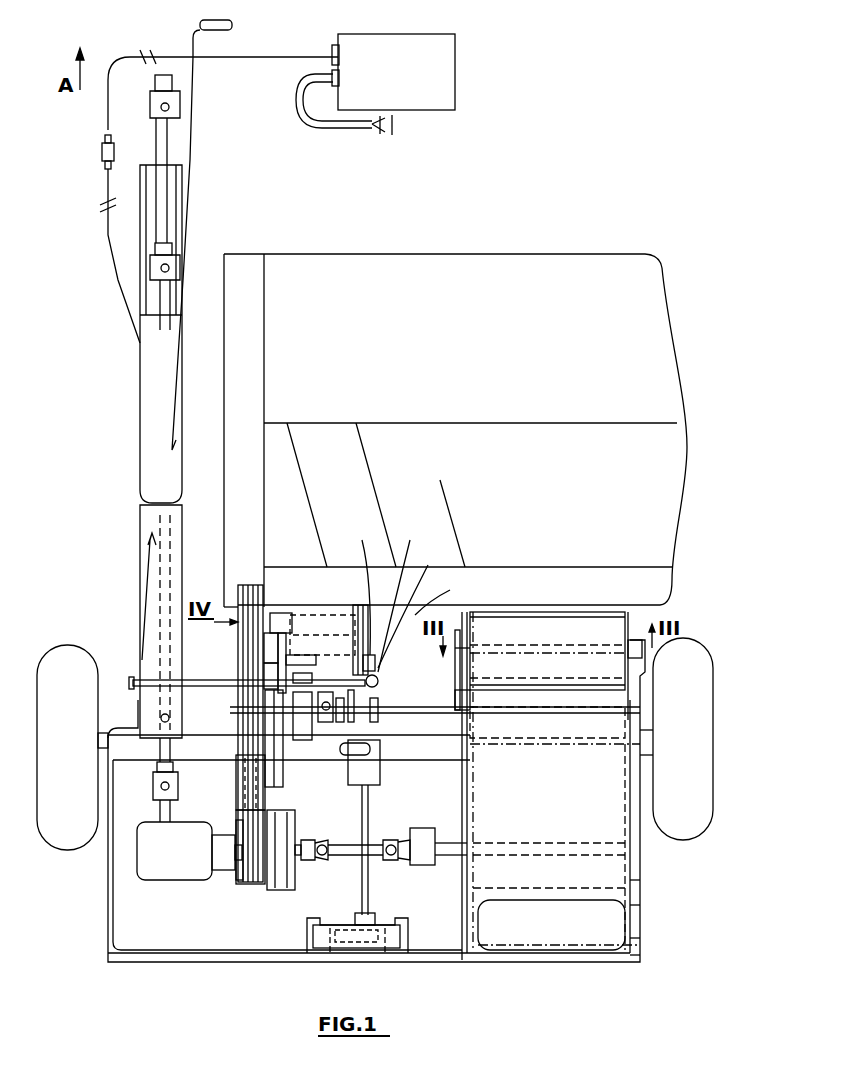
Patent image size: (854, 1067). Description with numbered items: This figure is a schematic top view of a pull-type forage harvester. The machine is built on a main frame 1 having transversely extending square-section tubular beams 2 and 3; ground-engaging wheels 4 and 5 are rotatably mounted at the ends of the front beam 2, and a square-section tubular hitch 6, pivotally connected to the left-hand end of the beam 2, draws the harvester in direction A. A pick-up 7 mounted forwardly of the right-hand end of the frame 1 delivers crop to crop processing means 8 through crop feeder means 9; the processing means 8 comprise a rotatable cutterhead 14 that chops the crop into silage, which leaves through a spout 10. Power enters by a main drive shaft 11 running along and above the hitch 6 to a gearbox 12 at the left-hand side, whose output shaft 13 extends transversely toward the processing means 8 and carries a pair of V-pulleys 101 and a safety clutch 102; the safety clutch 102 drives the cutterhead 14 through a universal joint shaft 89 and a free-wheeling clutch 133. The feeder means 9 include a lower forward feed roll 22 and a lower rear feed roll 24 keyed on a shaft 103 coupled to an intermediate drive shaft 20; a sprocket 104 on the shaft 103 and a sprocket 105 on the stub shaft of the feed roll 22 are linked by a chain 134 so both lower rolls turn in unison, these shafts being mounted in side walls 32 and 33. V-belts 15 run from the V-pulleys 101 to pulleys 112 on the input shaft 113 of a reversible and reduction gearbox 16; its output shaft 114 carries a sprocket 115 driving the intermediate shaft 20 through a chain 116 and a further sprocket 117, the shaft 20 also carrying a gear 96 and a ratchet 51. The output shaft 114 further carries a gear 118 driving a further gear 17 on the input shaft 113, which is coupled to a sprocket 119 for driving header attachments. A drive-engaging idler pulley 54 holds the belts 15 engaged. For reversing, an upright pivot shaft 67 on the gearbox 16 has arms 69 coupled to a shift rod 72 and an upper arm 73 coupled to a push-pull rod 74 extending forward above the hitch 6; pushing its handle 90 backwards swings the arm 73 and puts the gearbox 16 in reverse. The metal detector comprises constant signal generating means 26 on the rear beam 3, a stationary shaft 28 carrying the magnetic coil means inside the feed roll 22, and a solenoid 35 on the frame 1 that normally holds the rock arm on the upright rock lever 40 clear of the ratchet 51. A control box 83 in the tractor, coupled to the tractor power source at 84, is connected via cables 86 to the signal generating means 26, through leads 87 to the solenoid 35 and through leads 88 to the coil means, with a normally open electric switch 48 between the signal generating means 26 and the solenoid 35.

The main frame 1 is at (305, 966).
The tubular beam 2 is at (435, 757).
The tubular beam 3 is at (422, 962).
The ground-engaging wheel 4 is at (77, 853).
The ground-engaging wheel 5 is at (690, 838).
The tubular hitch 6 is at (178, 165).
The pick-up 7 is at (478, 254).
The crop processing means 8 is at (655, 938).
The crop feeder means 9 is at (645, 617).
The spout 10 is at (575, 955).
The main drive shaft 11 is at (168, 195).
The gearbox 12 is at (163, 882).
The output shaft 13 is at (246, 884).
The cutterhead 14 is at (642, 910).
The V-belts 15 is at (266, 808).
The reversible and reduction gearbox 16 is at (320, 615).
The further gear 17 is at (358, 605).
The intermediate drive shaft 20 is at (425, 707).
The forward feed roll 22 is at (605, 612).
The rear feed roll 24 is at (620, 740).
The constant signal generating means 26 is at (362, 948).
The stationary shaft 28 is at (548, 612).
The side wall 32 is at (466, 800).
The side wall 33 is at (645, 956).
The solenoid 35 is at (397, 740).
The rock lever 40 is at (382, 765).
The electric switch 48 is at (360, 800).
The ratchet 51 is at (365, 712).
The drive-engaging idler pulley 54 is at (236, 776).
The pivot shaft 67 is at (455, 648).
The arms 69 is at (445, 594).
The shift rod 72 is at (412, 604).
The arm 73 is at (228, 680).
The push-pull rod 74 is at (198, 103).
The control box 83 is at (458, 76).
The electric power source connection 84 is at (347, 130).
The cables 86 is at (298, 57).
The leads 87 is at (370, 808).
The leads 88 is at (642, 884).
The universal joint shaft 89 is at (396, 866).
The handle 90 is at (233, 24).
The gear 96 is at (383, 688).
The V-pulleys 101 is at (240, 822).
The safety clutch 102 is at (283, 892).
The shaft 103 is at (558, 738).
The sprocket 104 is at (476, 720).
The sprocket 105 is at (478, 647).
The pulleys 112 is at (262, 650).
The input shaft 113 is at (290, 615).
The output shaft 114 is at (287, 664).
The sprocket 115 is at (283, 620).
The chain 116 is at (278, 620).
The further sprocket 117 is at (268, 700).
The gear 118 is at (405, 593).
The sprocket 119 is at (366, 584).
The free-wheeling clutch 133 is at (430, 868).
The chain 134 is at (478, 679).